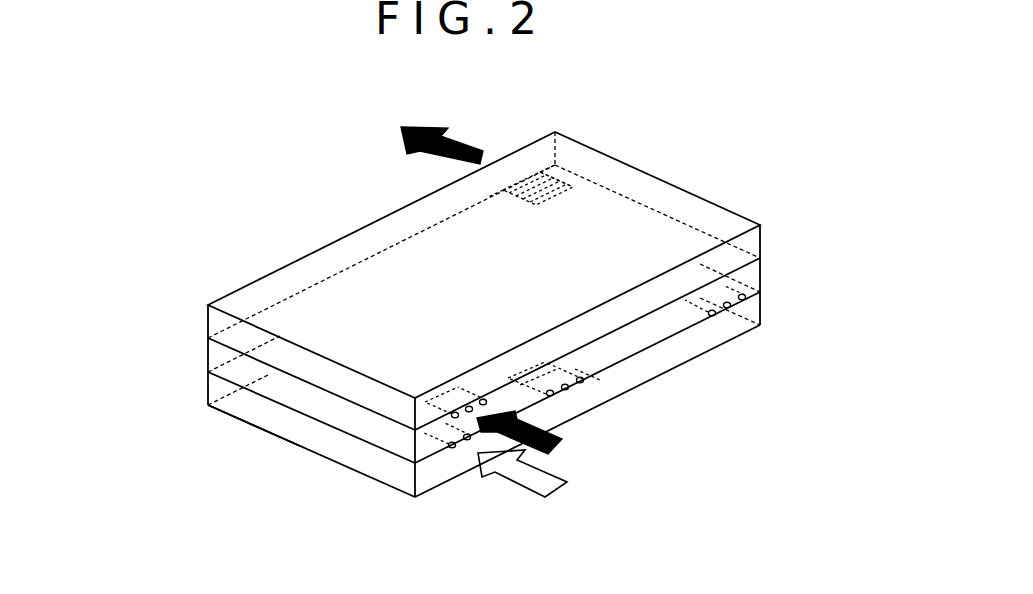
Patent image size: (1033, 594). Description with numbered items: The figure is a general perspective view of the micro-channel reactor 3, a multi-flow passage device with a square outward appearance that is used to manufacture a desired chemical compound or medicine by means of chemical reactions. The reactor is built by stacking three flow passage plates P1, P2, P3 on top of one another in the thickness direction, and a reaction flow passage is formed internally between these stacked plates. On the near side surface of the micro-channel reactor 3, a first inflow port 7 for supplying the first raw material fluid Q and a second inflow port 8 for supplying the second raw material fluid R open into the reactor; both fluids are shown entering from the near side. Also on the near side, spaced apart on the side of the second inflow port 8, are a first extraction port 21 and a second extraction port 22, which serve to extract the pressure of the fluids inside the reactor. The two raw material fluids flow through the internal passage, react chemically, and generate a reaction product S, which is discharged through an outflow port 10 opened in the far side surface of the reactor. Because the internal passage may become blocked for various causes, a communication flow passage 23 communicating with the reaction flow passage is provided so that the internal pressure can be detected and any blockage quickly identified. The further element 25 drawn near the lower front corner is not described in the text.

The micro-channel reactor 3 is at (592, 127).
The outflow port 10 is at (503, 190).
The first inflow port 7 is at (482, 400).
The second inflow port 8 is at (467, 440).
The first extraction port 21 is at (581, 384).
The second extraction port 22 is at (744, 300).
The communication flow passage 23 is at (630, 382).
The channel 25 is at (428, 468).
The flow passage plate P1 is at (215, 322).
The flow passage plate P2 is at (215, 356).
The flow passage plate P3 is at (215, 389).
The reaction product S is at (430, 137).
The first raw material fluid Q is at (527, 444).
The second raw material fluid R is at (526, 481).